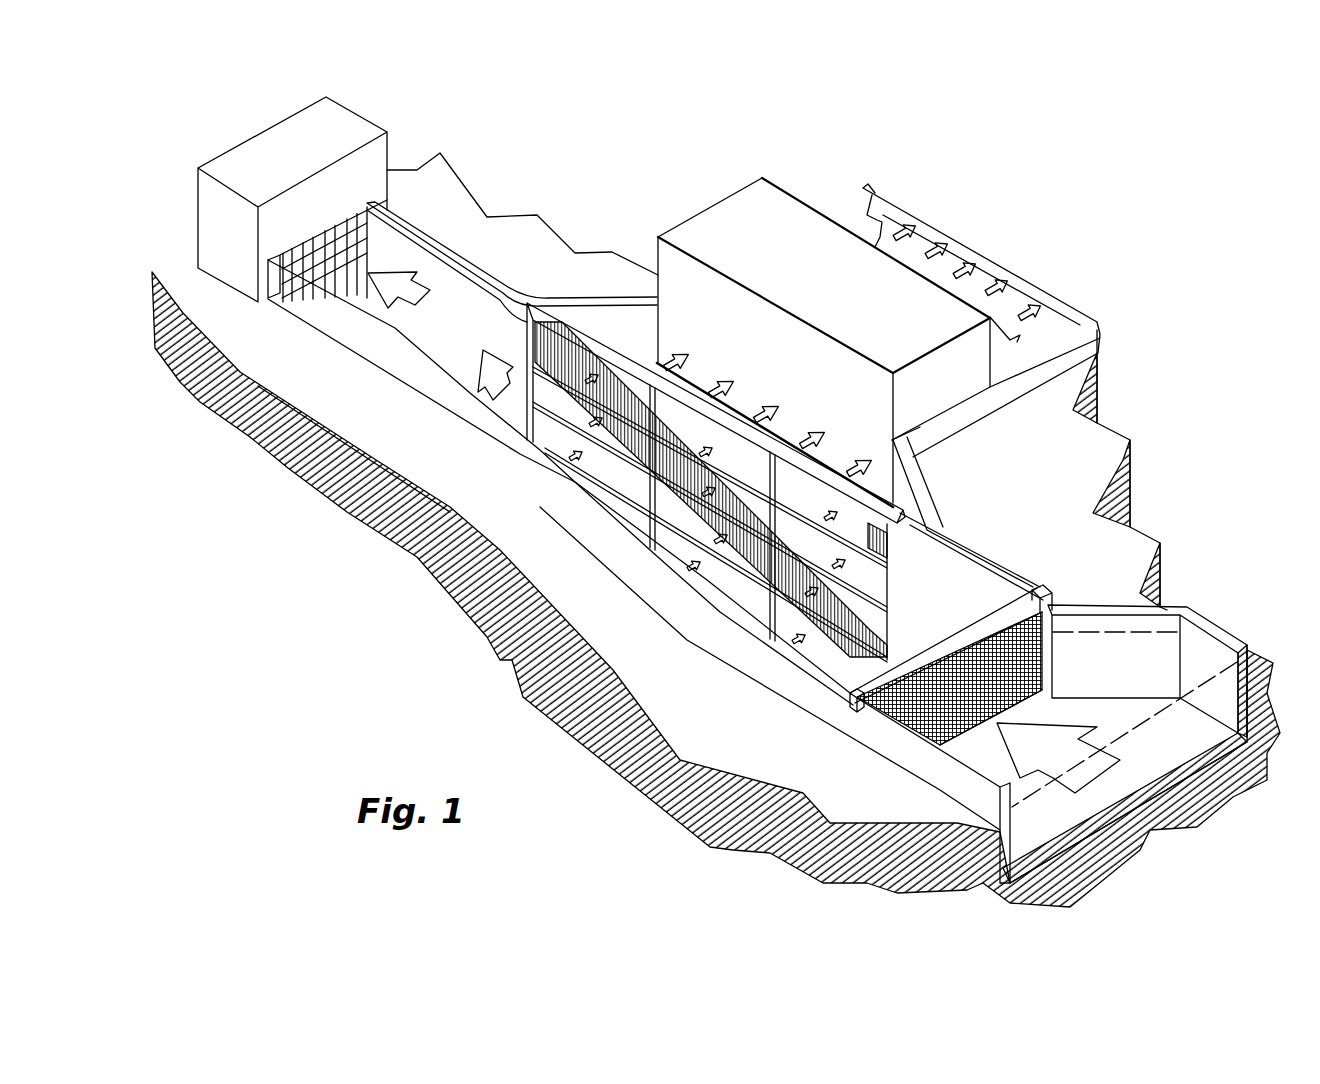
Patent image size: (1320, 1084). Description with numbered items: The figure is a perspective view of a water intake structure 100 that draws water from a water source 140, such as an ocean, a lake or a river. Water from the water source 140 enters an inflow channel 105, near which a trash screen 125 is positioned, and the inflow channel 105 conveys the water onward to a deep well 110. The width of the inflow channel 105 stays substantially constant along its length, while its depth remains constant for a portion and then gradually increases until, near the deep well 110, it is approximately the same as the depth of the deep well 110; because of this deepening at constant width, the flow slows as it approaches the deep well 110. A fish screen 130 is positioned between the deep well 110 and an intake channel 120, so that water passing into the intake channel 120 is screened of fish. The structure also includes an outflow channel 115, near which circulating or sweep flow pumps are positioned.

The water intake structure 100 is at (1020, 253).
The inflow channel 105 is at (928, 603).
The deep well 110 is at (833, 603).
The outflow channel 115 is at (448, 305).
The intake channel 120 is at (623, 322).
The trash screen 125 is at (1047, 675).
The fish screen 130 is at (503, 327).
The water source 140 is at (365, 645).